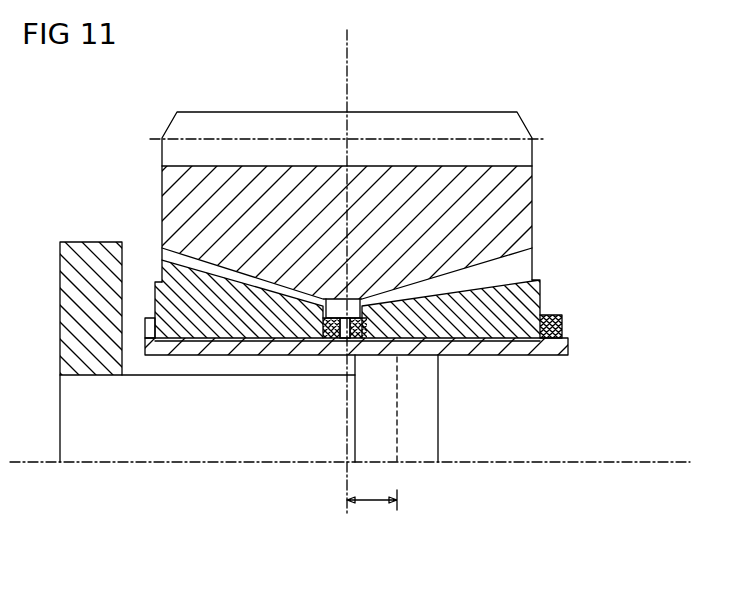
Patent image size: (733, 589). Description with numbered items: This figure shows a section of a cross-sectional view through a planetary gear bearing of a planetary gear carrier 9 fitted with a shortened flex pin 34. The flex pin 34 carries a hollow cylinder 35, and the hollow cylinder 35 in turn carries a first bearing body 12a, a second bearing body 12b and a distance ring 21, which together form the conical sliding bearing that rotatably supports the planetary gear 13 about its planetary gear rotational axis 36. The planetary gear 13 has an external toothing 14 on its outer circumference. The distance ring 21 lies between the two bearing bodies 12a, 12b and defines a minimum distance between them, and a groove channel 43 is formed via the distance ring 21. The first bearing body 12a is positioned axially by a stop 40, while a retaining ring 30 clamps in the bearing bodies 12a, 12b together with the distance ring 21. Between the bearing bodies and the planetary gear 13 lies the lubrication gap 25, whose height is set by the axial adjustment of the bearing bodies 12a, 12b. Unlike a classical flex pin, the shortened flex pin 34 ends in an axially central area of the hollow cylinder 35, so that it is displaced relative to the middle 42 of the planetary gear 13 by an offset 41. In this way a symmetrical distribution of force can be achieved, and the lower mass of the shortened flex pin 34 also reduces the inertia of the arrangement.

The planetary carrier 9 is at (92, 240).
The first bearing body 12a is at (223, 318).
The second bearing body 12b is at (540, 292).
The planetary gear 13 is at (533, 207).
The external toothing 14 is at (403, 123).
The distance ring 21 is at (345, 322).
The lubrication gap 25 is at (258, 280).
The retaining ring 30 is at (562, 328).
The flex pin 34 is at (430, 407).
The hollow cylinder 35 is at (568, 347).
The planetary gear rotational axis 36 is at (682, 460).
The stop 40 is at (145, 322).
The offset 41 is at (376, 504).
The middle of the planetary gear 42 is at (352, 47).
The groove channel 43 is at (345, 299).